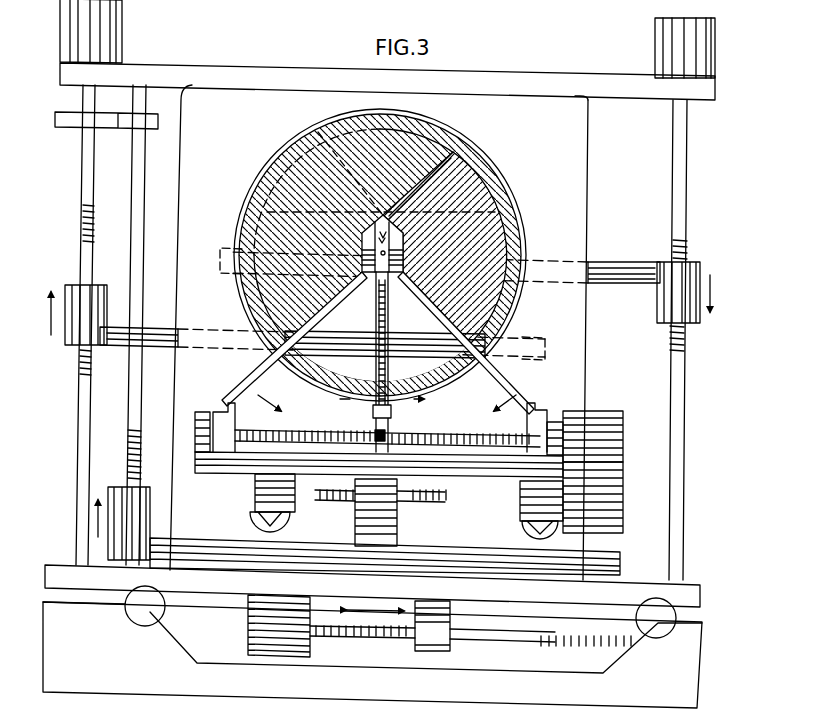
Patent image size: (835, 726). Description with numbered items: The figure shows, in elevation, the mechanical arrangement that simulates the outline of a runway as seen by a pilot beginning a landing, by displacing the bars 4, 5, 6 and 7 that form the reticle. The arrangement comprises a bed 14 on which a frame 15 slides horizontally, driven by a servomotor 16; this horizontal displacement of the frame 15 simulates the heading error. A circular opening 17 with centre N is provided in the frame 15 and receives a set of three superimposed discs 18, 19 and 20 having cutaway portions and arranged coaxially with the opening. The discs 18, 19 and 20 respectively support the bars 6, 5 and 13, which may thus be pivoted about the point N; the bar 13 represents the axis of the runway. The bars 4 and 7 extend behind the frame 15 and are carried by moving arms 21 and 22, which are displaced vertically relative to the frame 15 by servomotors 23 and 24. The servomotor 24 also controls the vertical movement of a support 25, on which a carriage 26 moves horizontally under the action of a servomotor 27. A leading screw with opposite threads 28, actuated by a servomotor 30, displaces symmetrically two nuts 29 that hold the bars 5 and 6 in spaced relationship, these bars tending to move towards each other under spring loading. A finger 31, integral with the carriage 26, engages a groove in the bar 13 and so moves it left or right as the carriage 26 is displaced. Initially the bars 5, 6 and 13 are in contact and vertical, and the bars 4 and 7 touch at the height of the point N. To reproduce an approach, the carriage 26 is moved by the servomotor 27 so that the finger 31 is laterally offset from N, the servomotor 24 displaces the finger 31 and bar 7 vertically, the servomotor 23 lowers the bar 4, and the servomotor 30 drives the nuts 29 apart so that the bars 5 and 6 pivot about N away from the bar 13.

The bar 4 is at (384, 261).
The bar 5 is at (466, 343).
The bar 6 is at (294, 339).
The bar 7 is at (425, 333).
The bar 13 is at (378, 300).
The bed 14 is at (372, 647).
The frame 15 is at (380, 335).
The servomotor 16 is at (262, 626).
The circular opening 17 is at (512, 203).
The disc 18 is at (420, 132).
The disc 19 is at (463, 172).
The disc 20 is at (330, 132).
The moving arm 21 is at (620, 262).
The moving arm 22 is at (156, 355).
The servomotor 23 is at (667, 299).
The servomotor 24 is at (106, 282).
The support 25 is at (364, 531).
The carriage 26 is at (379, 499).
The servomotor 27 is at (608, 497).
The leading screw with opposite threads 28 is at (440, 430).
The nuts 29 is at (379, 425).
The servomotor 30 is at (610, 436).
The finger 31 is at (386, 427).